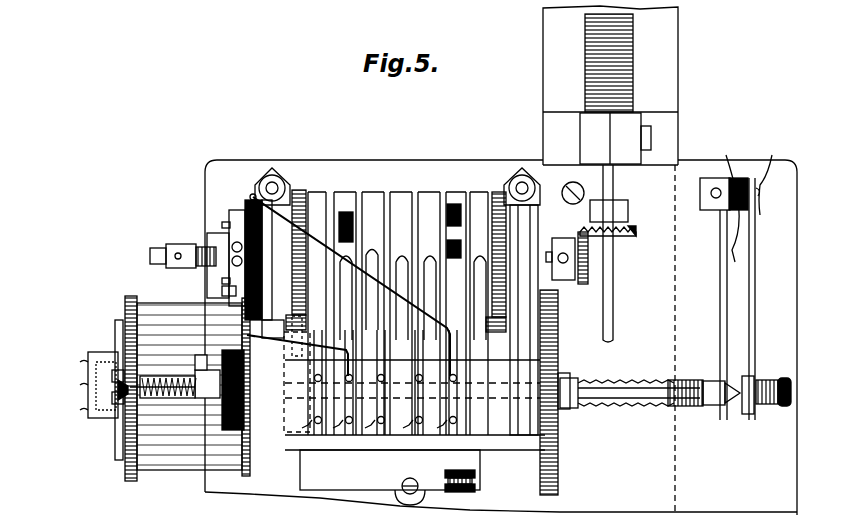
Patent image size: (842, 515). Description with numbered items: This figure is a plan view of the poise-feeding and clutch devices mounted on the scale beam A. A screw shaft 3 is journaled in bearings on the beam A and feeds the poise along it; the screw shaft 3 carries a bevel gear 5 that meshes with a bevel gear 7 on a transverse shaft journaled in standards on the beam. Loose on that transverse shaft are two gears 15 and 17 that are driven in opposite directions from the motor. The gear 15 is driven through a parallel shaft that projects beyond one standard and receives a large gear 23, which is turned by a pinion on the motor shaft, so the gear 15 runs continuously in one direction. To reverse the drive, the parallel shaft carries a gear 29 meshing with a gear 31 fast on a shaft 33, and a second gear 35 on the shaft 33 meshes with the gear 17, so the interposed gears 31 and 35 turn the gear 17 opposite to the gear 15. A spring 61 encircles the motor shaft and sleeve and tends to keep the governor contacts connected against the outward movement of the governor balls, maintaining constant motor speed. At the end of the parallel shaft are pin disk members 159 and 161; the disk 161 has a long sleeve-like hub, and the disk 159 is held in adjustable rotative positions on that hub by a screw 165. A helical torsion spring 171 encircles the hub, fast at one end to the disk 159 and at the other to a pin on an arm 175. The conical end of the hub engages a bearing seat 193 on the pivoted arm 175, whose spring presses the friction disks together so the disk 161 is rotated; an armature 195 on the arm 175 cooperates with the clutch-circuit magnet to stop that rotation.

The beam A is at (660, 57).
The screw shaft 3 is at (583, 58).
The bevel gear 5 is at (633, 229).
The bevel gear 7 is at (582, 272).
The gear 15 is at (494, 194).
The gear 17 is at (300, 192).
The large gear 23 is at (557, 352).
The gear 29 is at (287, 424).
The gear 31 is at (284, 355).
The shaft 33 is at (395, 352).
The gear 35 is at (286, 365).
The spring 61 is at (594, 384).
The disk 159 is at (197, 362).
The disk 161 is at (210, 358).
The screw 165 is at (180, 408).
The helical torsion spring 171 is at (118, 356).
The arm 175 is at (112, 380).
The bearing seat 193 is at (118, 395).
The armature 195 is at (118, 402).